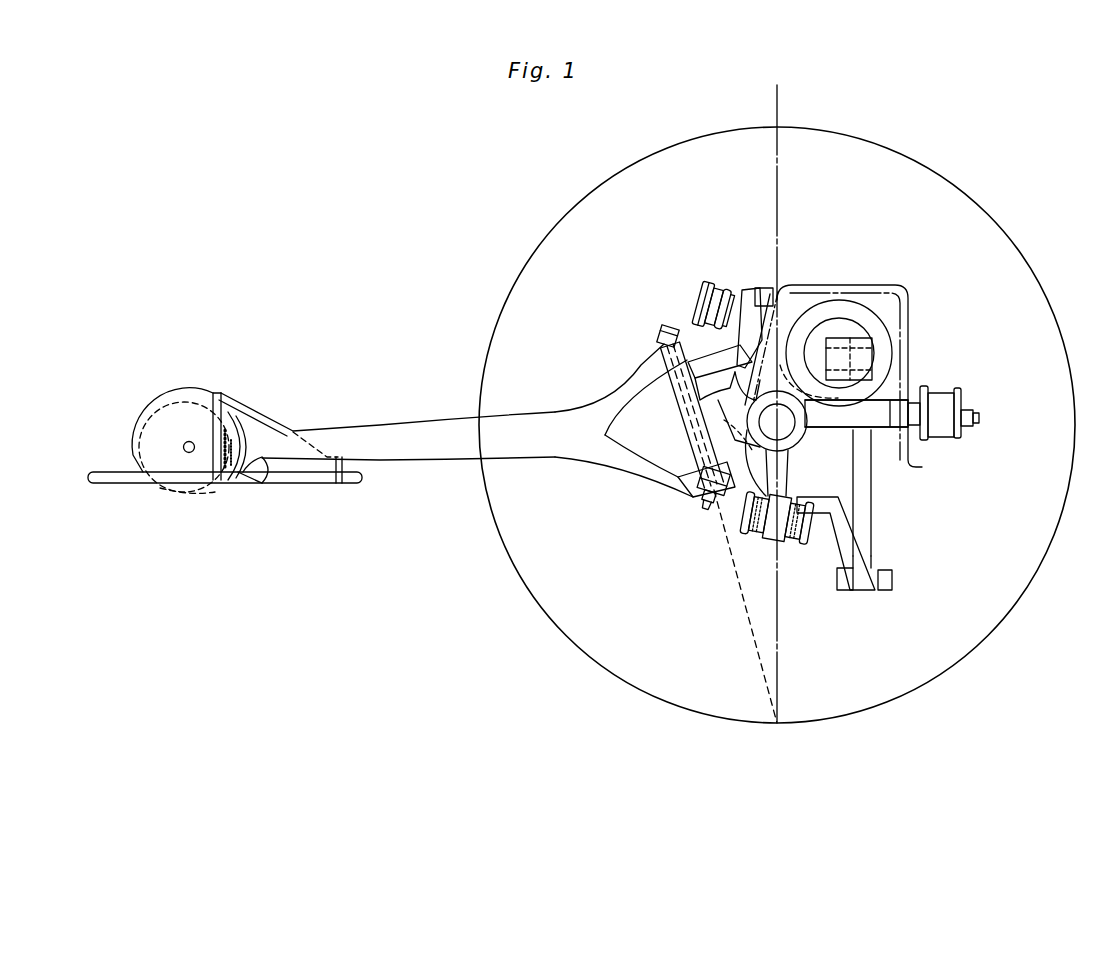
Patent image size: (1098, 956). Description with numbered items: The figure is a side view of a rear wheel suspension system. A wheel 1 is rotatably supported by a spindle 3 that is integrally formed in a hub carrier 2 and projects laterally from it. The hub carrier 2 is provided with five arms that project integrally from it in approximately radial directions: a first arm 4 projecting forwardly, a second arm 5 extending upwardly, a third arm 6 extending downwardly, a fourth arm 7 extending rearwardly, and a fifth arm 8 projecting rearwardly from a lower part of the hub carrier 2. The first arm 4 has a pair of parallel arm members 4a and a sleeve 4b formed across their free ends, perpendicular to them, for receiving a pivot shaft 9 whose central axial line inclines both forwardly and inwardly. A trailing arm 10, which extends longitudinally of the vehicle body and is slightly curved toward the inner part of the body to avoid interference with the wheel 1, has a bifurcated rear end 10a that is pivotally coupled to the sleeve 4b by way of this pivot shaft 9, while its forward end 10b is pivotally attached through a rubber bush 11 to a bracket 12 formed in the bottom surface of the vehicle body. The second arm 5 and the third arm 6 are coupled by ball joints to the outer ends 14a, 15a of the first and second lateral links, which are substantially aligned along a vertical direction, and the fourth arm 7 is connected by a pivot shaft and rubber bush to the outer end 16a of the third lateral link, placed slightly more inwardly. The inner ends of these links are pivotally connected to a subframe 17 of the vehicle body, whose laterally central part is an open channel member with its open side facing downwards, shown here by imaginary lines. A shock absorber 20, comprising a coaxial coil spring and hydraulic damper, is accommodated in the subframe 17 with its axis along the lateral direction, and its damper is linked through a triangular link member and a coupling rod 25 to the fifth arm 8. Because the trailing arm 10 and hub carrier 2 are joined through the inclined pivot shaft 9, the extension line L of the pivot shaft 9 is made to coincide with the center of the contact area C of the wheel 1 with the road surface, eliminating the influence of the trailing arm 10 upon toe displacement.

The wheel 1 is at (1036, 277).
The hub carrier 2 is at (809, 430).
The spindle 3 is at (792, 436).
The first arm 4 is at (708, 354).
The arm members 4a is at (735, 372).
The sleeve 4b is at (690, 451).
The second arm 5 is at (745, 288).
The third arm 6 is at (769, 540).
The fourth arm 7 is at (892, 398).
The fifth arm 8 is at (862, 546).
The pivot shaft 9 is at (683, 415).
The trailing arm 10 is at (446, 421).
The bifurcated rear end 10a is at (657, 346).
The forward end 10b is at (260, 466).
The rubber bush 11 is at (222, 478).
The bracket 12 is at (205, 392).
The outer end of the first lateral link 14a is at (702, 288).
The outer end of the second lateral link 15a is at (805, 540).
The outer end of the third lateral link 16a is at (940, 440).
The subframe 17 is at (906, 287).
The shock absorber 20 is at (838, 303).
The coupling rod 25 is at (872, 512).
The extension line of the pivot shaft L is at (740, 585).
The center of the contact area C is at (782, 721).